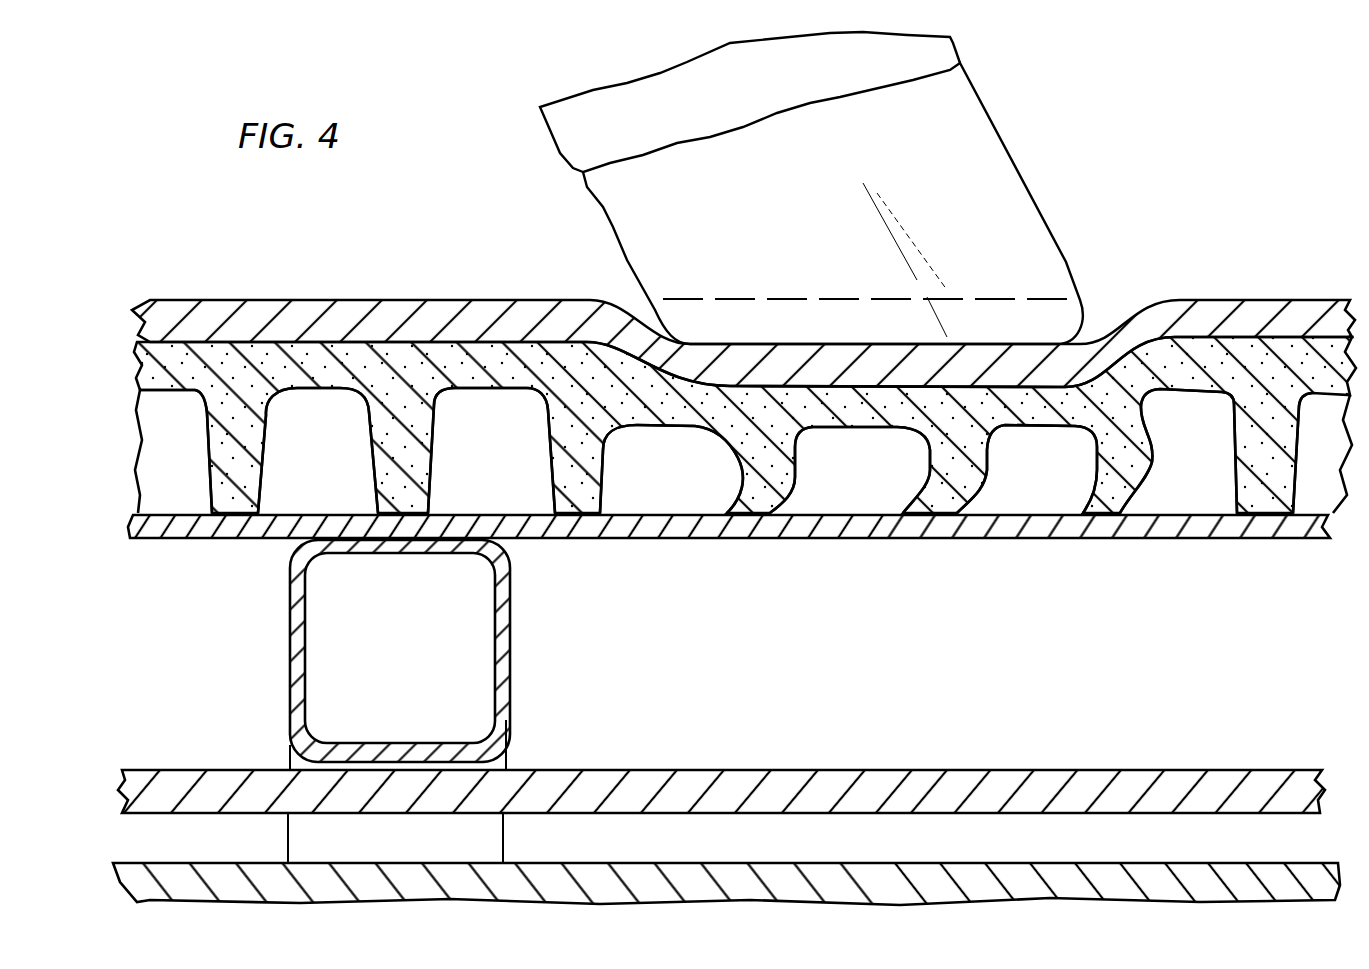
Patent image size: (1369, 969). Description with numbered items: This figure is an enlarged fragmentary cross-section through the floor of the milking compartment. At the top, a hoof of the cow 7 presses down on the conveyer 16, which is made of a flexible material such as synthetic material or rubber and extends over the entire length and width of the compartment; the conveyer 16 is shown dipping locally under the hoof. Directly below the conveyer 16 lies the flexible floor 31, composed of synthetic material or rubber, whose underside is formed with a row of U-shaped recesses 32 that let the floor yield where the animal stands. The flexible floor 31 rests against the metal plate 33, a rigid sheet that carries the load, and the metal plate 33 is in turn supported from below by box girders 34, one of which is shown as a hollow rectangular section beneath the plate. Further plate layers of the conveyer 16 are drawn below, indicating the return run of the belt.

The cow 7 is at (751, 84).
The conveyer 16 is at (370, 307).
The flexible floor 31 is at (527, 356).
The U-shaped recesses 32 is at (303, 497).
The metal plate 33 is at (810, 530).
The box girders 34 is at (507, 693).